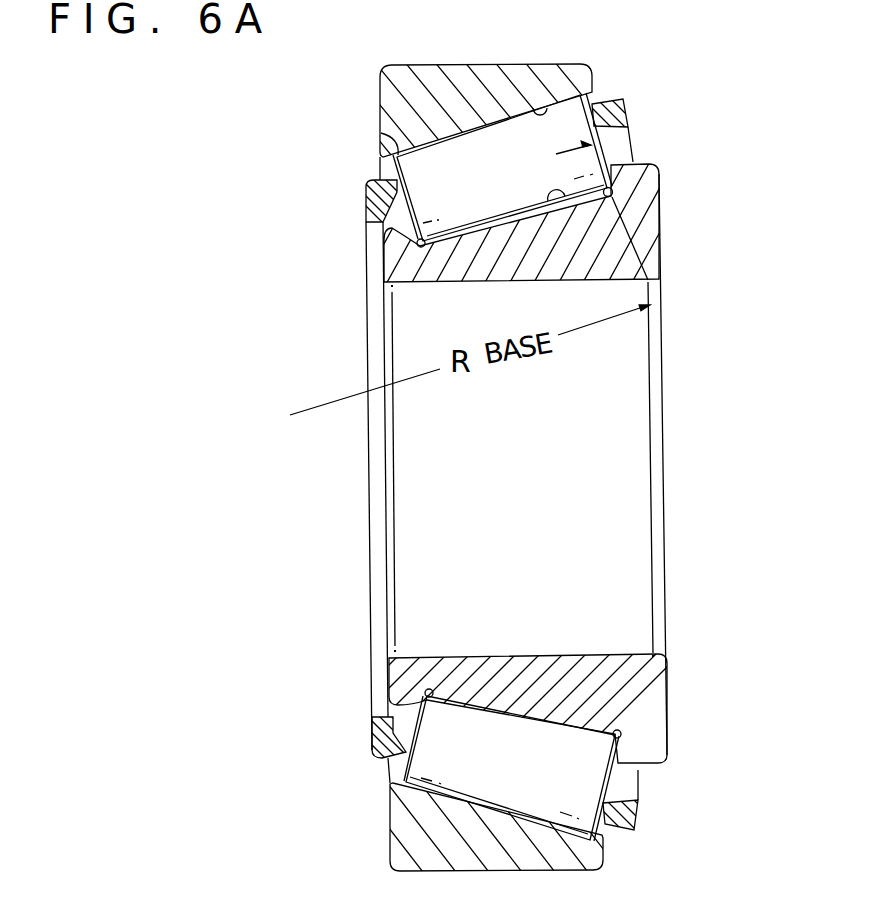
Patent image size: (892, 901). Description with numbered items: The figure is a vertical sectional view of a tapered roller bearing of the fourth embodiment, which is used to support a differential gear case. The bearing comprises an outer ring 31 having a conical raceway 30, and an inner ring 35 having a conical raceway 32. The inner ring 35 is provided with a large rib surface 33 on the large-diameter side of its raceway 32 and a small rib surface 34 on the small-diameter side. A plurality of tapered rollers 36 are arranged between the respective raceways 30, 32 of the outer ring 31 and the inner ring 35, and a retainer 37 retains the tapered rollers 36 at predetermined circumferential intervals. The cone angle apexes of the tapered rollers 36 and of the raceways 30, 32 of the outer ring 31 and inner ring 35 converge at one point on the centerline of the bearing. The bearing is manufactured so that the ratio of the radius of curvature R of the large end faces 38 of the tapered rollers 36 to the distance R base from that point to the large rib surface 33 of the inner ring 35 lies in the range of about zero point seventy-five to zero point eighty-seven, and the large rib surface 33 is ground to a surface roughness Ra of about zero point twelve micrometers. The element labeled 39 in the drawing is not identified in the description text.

The conical raceway 30 is at (553, 100).
The outer ring 31 is at (497, 83).
The conical raceway 32 is at (618, 200).
The large rib surface 33 is at (603, 160).
The small rib surface 34 is at (384, 223).
The inner ring 35 is at (455, 274).
The tapered rollers 36 is at (381, 137).
The retainer 37 is at (369, 193).
The large end faces 38 is at (628, 124).
The roller small end face 39 is at (517, 168).